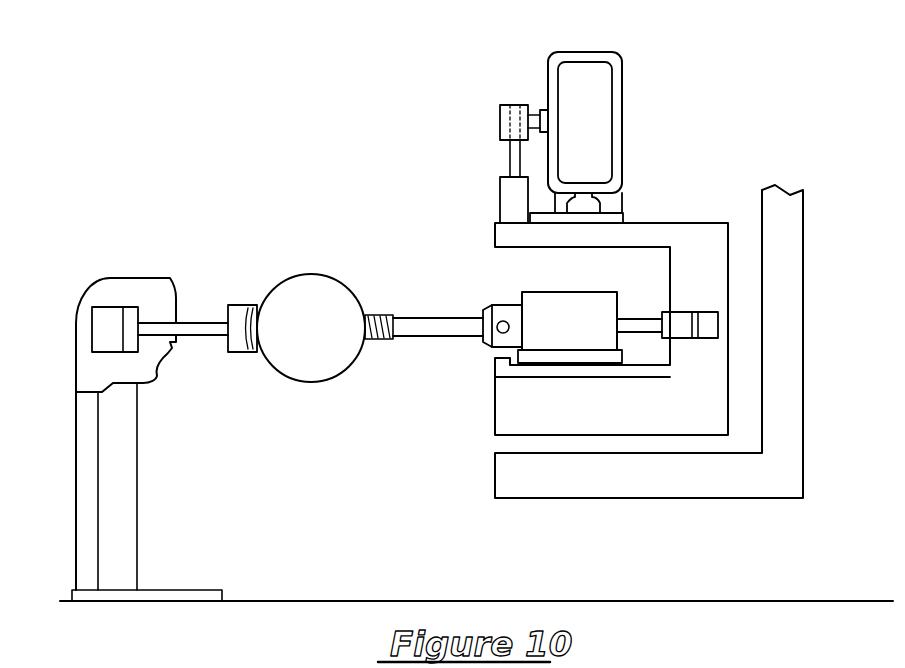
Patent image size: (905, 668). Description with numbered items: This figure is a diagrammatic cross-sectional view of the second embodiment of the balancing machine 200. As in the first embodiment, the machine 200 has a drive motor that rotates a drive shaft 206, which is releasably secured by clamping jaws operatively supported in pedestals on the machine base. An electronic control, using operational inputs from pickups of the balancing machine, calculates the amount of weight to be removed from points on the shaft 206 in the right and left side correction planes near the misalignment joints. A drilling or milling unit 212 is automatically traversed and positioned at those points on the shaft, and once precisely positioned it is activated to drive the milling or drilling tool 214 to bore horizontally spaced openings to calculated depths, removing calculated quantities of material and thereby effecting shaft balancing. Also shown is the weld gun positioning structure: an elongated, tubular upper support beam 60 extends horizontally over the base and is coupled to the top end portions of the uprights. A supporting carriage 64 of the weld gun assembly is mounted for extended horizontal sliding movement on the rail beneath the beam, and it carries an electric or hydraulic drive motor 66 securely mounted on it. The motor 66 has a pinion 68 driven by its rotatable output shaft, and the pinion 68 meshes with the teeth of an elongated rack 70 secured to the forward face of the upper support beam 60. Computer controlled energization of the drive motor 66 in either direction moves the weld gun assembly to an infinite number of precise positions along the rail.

The machine 200 is at (333, 130).
The drive shaft 206 is at (303, 272).
The drilling or milling unit 212 is at (520, 278).
The milling or drilling tool 214 is at (430, 338).
The upper support beam 60 is at (597, 57).
The carriage 64 is at (710, 237).
The drive motor 66 is at (510, 187).
The pinion 68 is at (507, 118).
The rack 70 is at (545, 110).